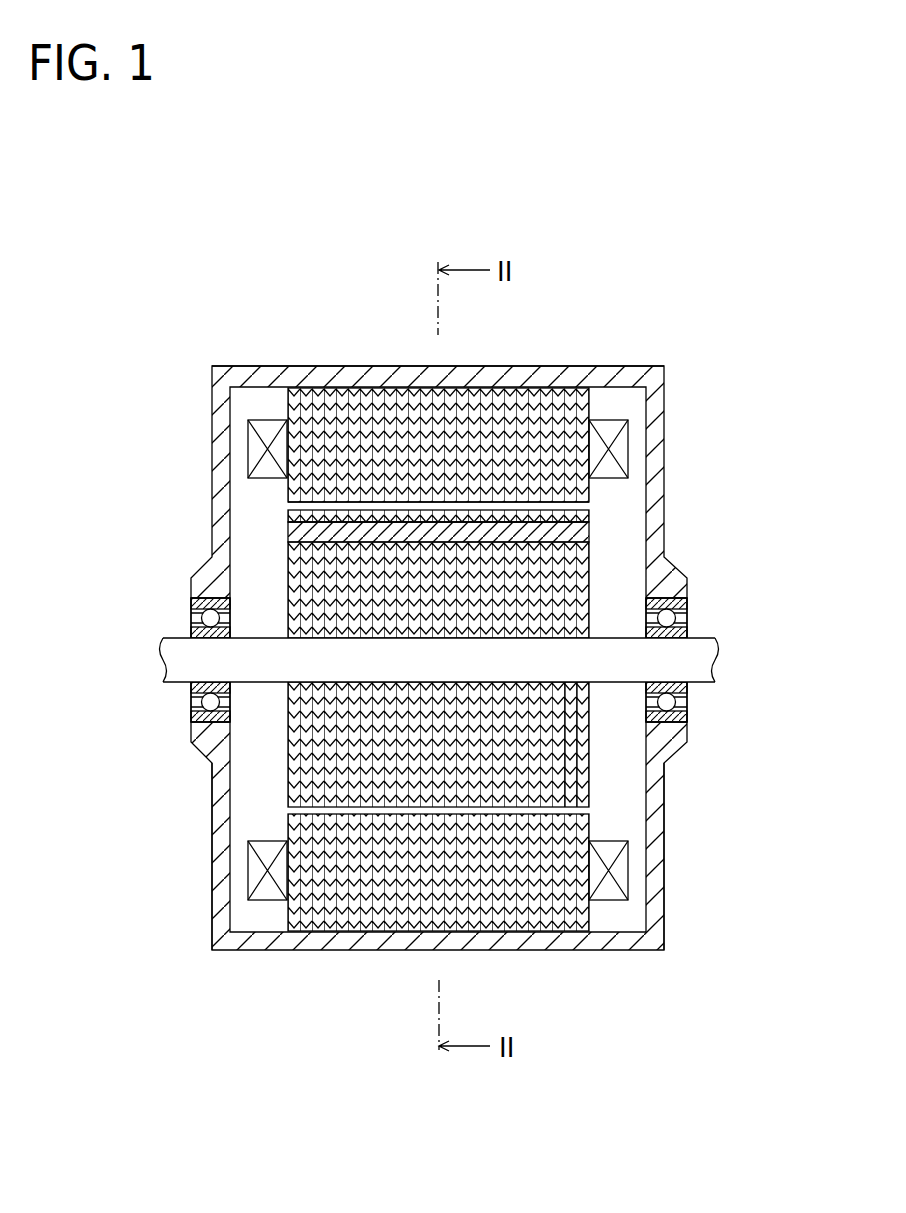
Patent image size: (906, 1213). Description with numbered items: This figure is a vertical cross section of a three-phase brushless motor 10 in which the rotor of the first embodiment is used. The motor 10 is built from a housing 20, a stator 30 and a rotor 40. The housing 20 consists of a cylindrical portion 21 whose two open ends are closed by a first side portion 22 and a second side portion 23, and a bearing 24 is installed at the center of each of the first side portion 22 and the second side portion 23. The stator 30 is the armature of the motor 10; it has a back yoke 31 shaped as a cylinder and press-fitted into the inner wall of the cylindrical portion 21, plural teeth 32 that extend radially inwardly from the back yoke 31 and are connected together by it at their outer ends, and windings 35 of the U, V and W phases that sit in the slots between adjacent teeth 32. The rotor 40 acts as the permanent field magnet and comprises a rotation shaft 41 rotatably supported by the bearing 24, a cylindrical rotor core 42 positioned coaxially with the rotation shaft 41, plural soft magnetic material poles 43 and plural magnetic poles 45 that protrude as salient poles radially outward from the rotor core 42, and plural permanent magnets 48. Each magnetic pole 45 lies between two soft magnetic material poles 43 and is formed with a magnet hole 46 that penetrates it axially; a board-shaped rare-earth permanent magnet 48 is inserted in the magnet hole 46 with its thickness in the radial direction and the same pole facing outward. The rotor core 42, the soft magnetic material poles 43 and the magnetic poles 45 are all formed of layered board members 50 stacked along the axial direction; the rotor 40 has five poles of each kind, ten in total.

The motor 10 is at (456, 607).
The housing 20 is at (445, 617).
The cylindrical portion 21 is at (612, 375).
The first side portion 22 is at (222, 867).
The second side portion 23 is at (660, 866).
The bearing 24 is at (210, 702).
The stator 30 is at (449, 659).
The back yoke 31 is at (296, 402).
The teeth 32 is at (290, 492).
The winding 35 is at (255, 450).
The rotor 40 is at (456, 668).
The rotation shaft 41 is at (700, 665).
The rotor core 42 is at (290, 688).
The soft magnetic material pole 43 is at (296, 797).
The magnetic pole 45 is at (291, 515).
The magnet hole 46 is at (558, 533).
The permanent magnet 48 is at (287, 533).
The layered board members 50 is at (584, 752).